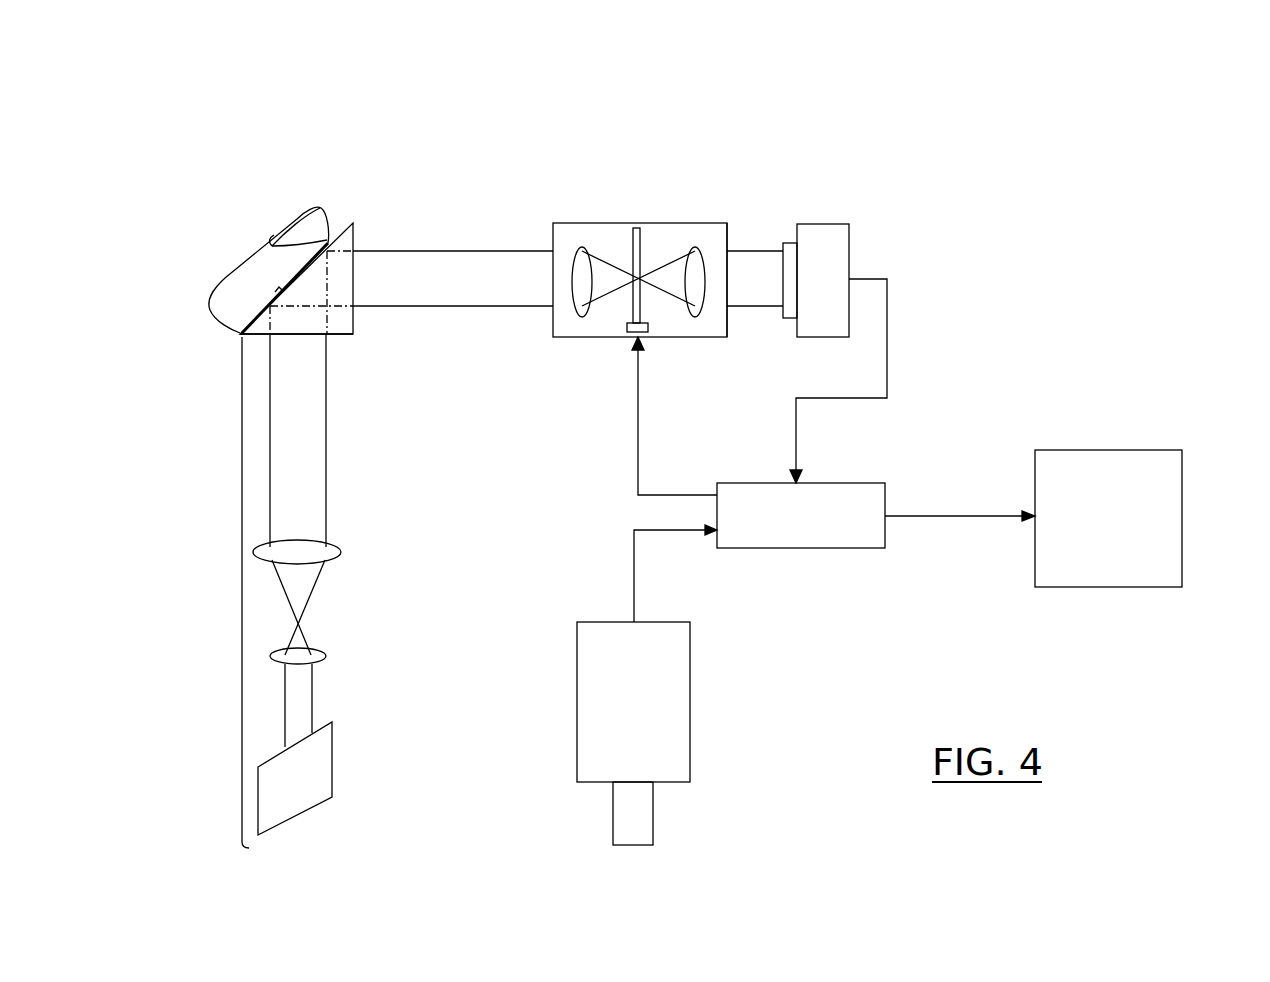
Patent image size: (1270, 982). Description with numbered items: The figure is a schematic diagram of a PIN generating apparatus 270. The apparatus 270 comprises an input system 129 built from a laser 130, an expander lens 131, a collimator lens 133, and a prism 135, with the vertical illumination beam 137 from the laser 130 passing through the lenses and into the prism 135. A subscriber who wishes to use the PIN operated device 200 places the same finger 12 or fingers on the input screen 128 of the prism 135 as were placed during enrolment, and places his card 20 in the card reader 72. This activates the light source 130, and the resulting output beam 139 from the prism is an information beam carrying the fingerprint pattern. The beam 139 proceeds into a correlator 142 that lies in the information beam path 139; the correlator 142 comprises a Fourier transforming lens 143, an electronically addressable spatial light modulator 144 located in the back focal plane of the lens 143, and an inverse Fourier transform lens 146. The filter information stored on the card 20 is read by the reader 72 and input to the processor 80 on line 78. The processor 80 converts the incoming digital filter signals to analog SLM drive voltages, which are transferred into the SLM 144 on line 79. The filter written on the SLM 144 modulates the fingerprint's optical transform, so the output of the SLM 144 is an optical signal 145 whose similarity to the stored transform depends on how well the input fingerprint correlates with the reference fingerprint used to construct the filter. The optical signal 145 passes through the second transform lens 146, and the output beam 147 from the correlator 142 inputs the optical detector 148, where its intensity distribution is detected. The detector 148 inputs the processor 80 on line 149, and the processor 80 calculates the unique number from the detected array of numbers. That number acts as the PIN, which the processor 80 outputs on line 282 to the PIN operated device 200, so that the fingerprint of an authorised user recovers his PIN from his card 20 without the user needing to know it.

The finger 12 is at (229, 257).
The input screen 128 is at (365, 216).
The prism 135 is at (365, 343).
The information beam 139 is at (453, 278).
The illumination light beam 137 is at (326, 473).
The input system 129 is at (246, 487).
The collimator lens 133 is at (342, 552).
The expander lens 131 is at (327, 656).
The laser 130 is at (352, 773).
The correlator 142 is at (730, 207).
The Fourier transforming lens 143 is at (585, 247).
The spatial light modulator 144 is at (637, 228).
The optical signal 145 is at (671, 316).
The inverse Fourier transform lens 146 is at (697, 247).
The output beam 147 is at (713, 312).
The optical detector 148 is at (825, 223).
The line 149 is at (887, 367).
The line 79 is at (638, 452).
The processor 80 is at (857, 483).
The line 78 is at (634, 585).
The line 282 is at (960, 513).
The PIN operated device 200 is at (1097, 450).
The card reader 72 is at (690, 717).
The card 20 is at (653, 827).
The apparatus 270 is at (801, 95).